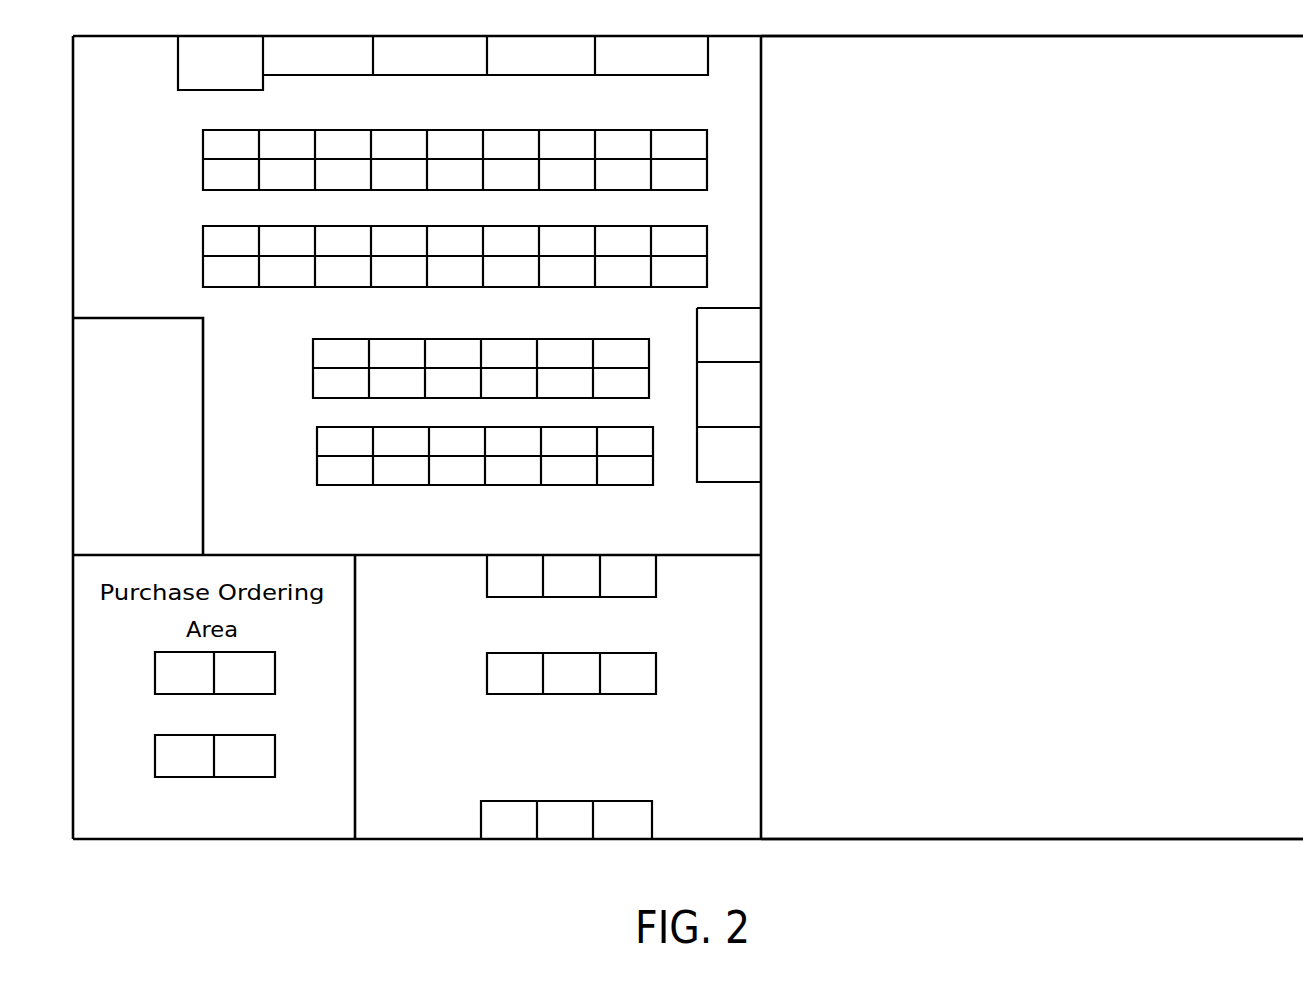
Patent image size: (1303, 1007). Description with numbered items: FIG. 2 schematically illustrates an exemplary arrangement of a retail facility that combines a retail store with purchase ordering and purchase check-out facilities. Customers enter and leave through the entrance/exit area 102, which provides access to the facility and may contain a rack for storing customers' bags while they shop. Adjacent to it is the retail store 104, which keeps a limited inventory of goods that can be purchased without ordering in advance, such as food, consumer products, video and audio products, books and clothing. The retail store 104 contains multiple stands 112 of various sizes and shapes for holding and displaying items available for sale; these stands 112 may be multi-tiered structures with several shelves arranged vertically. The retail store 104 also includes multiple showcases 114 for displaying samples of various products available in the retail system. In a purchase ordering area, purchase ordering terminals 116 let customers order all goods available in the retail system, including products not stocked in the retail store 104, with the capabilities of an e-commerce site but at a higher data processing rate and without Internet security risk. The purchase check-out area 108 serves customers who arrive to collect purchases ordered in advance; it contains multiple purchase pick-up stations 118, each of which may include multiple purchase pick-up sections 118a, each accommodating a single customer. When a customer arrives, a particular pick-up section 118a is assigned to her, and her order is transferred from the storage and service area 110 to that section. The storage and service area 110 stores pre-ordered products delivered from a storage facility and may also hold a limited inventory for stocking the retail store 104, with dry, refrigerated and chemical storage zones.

The entrance/exit area 102 is at (118, 508).
The retail store 104 is at (171, 258).
The purchase check-out area 108 is at (400, 731).
The storage and service area 110 is at (1096, 514).
The stands 112 is at (290, 130).
The showcases 114 is at (195, 90).
The purchase ordering terminals 116 is at (155, 668).
The purchase pick-up stations 118 is at (656, 573).
The purchase pick-up sections 118a is at (627, 653).